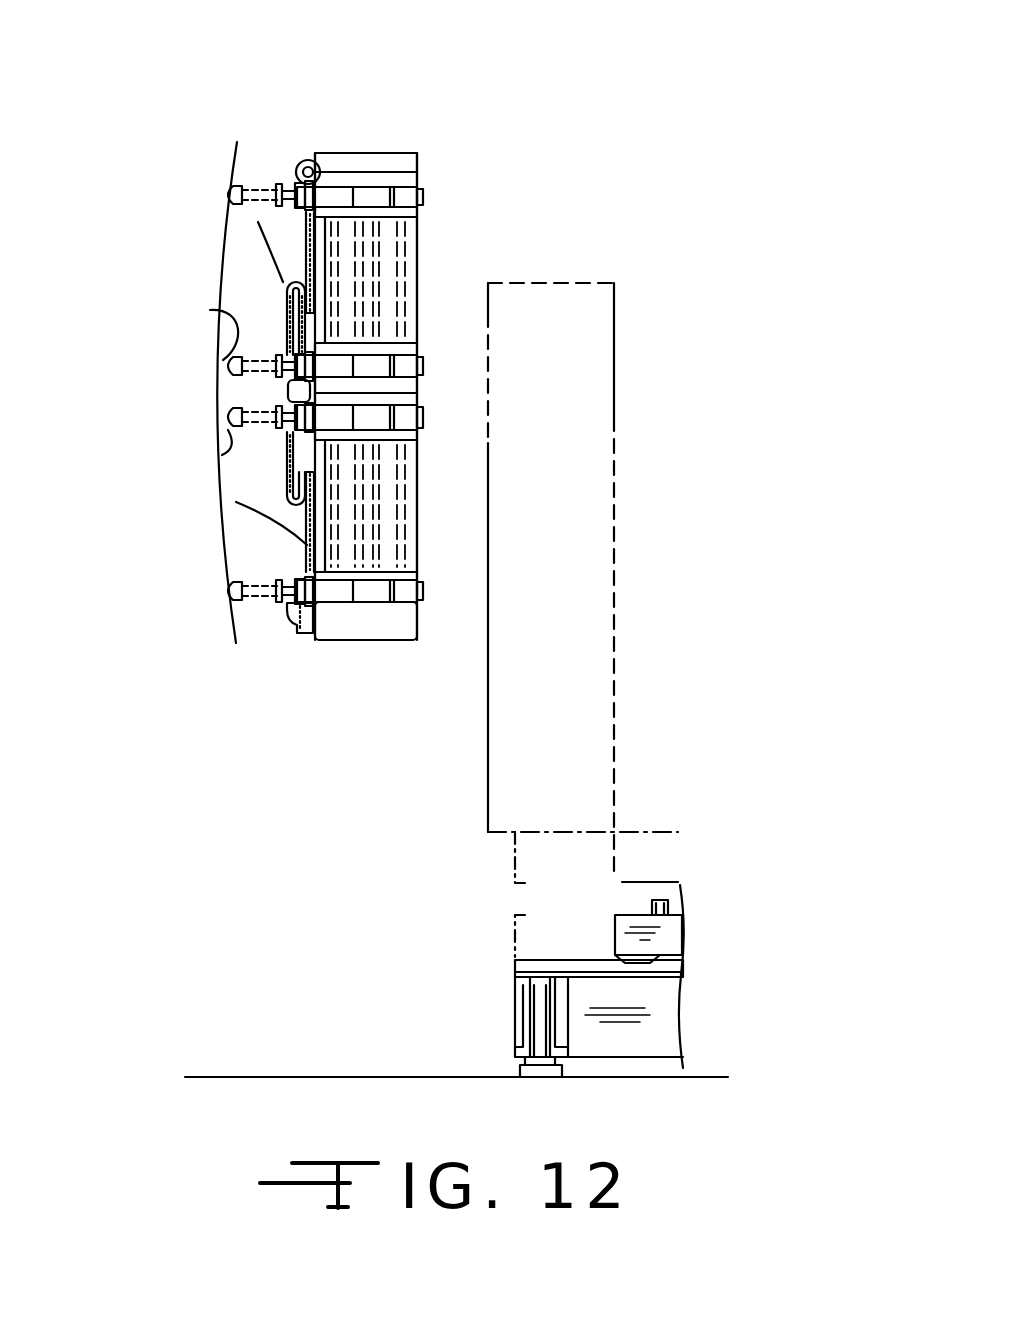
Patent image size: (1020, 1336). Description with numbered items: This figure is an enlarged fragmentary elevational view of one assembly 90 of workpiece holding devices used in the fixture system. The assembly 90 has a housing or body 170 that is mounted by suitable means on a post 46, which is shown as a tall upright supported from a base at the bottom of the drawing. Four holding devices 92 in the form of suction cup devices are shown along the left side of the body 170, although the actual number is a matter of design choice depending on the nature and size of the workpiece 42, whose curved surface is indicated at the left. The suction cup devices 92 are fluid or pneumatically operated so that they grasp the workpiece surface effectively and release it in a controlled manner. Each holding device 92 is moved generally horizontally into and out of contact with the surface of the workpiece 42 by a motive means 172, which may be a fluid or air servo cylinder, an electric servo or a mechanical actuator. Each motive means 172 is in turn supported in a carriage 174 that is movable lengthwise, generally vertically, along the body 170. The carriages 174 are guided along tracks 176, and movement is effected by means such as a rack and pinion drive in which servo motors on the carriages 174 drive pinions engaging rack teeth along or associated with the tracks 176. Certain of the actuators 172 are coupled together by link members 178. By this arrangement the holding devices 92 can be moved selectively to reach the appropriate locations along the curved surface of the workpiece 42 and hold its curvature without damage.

The workpiece 42 is at (228, 167).
The post 46 is at (597, 387).
The assembly of workpiece holding devices 90 is at (435, 361).
The workpiece holding device 92 is at (237, 188).
The housing or body 170 is at (449, 378).
The motive means 172 is at (296, 163).
The carriage 174 is at (412, 178).
The track 176 is at (402, 290).
The link member 178 is at (307, 237).